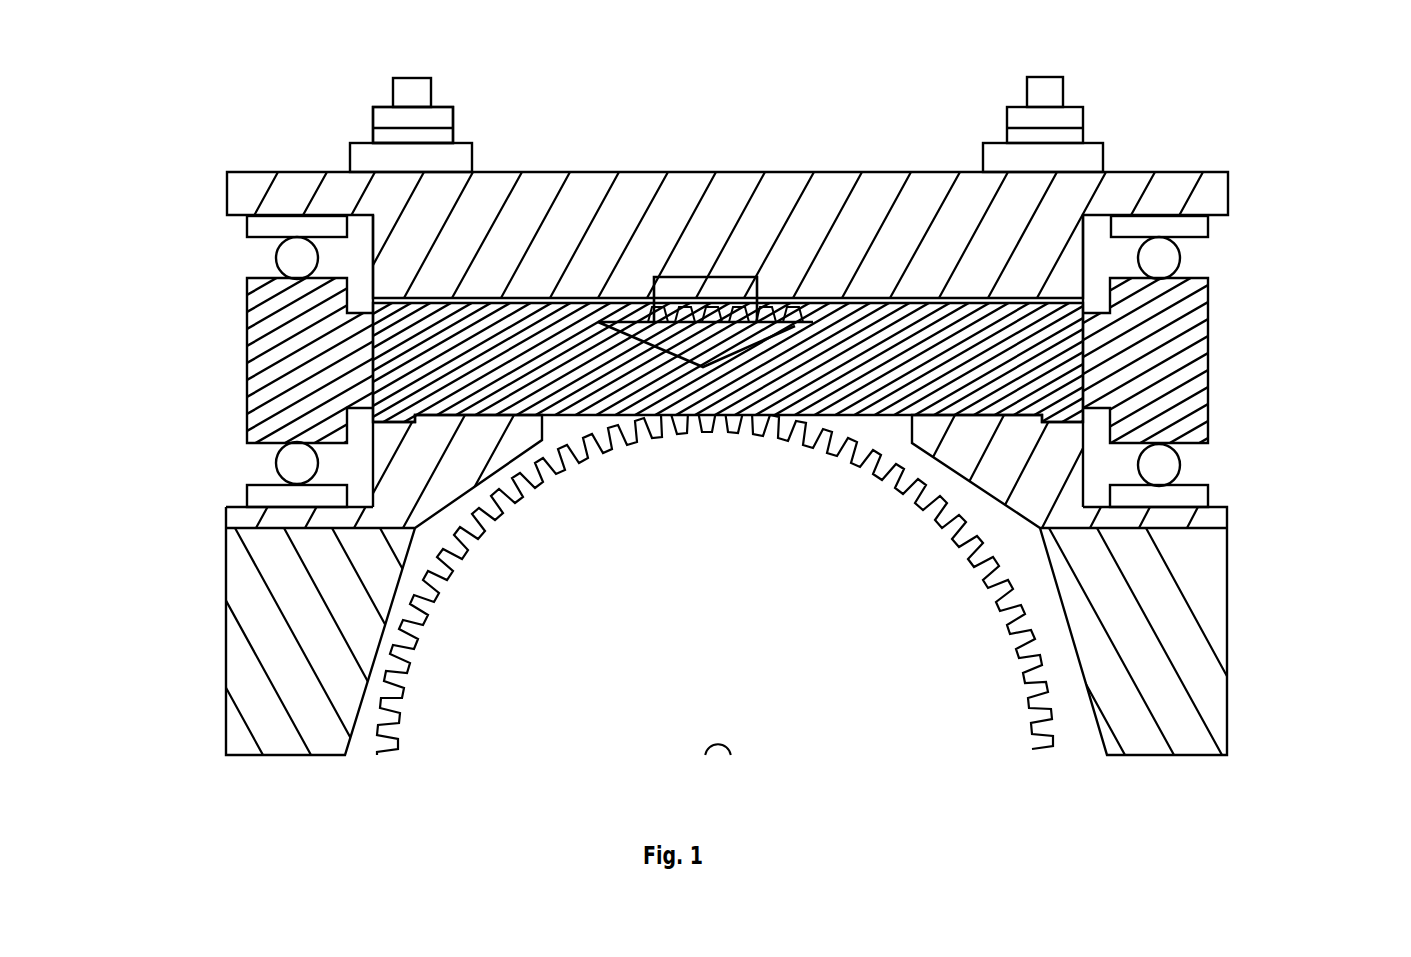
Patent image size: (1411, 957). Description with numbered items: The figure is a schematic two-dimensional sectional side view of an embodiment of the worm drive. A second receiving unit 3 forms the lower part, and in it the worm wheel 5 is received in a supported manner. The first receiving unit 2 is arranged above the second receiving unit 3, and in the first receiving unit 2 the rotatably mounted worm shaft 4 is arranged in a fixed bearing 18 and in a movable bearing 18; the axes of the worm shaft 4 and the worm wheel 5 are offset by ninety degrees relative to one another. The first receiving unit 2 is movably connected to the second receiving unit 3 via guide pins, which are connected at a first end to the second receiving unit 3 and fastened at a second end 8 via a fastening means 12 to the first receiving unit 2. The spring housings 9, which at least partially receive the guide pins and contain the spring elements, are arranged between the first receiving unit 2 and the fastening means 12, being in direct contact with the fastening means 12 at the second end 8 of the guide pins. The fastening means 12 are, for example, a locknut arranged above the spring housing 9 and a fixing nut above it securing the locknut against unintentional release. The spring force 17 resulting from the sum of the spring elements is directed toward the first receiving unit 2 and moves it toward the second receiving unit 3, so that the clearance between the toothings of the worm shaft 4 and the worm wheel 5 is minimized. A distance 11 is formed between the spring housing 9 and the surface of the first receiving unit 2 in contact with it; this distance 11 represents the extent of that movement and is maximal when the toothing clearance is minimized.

The first receiving unit 2 is at (1178, 192).
The second receiving unit 3 is at (1197, 655).
The worm shaft 4 is at (1190, 367).
The worm wheel 5 is at (440, 628).
The second end 8 is at (387, 88).
The spring housing 9 is at (973, 152).
The distance 11 is at (473, 168).
The fastening means 12 is at (462, 125).
The spring force 17 is at (697, 262).
The bearing 18 is at (1188, 257).